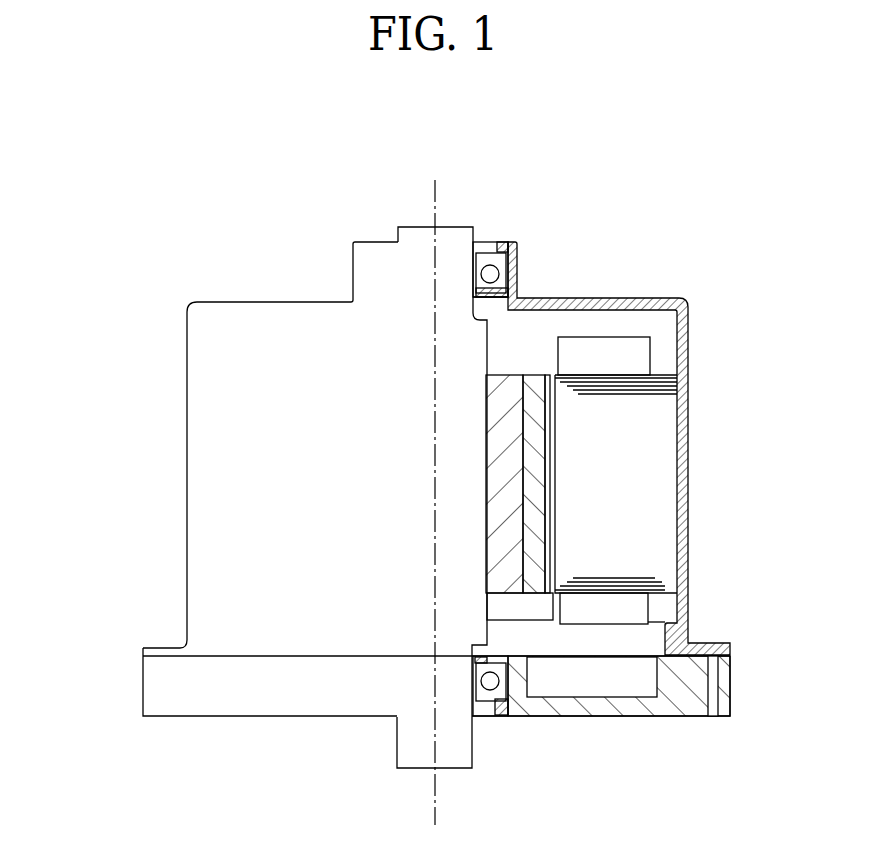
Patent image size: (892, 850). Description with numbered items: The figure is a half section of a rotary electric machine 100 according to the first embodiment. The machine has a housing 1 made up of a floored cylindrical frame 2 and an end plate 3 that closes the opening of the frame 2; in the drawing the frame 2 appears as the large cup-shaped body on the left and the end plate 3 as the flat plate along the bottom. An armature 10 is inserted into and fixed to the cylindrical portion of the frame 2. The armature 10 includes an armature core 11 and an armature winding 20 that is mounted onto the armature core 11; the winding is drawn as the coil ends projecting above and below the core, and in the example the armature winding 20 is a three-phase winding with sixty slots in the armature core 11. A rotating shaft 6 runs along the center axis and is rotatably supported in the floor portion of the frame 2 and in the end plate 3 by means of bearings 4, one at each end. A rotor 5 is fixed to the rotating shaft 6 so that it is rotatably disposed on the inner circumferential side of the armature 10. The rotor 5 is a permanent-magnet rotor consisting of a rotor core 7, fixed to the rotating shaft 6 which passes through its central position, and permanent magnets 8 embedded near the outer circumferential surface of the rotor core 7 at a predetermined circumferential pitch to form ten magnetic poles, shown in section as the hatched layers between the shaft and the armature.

The rotary electric machine 100 is at (173, 163).
The housing 1 is at (83, 585).
The frame 2 is at (202, 589).
The end plate 3 is at (160, 673).
The bearings 4 is at (518, 258).
The rotor 5 is at (507, 365).
The rotating shaft 6 is at (477, 338).
The rotor core 7 is at (513, 585).
The permanent magnets 8 is at (535, 582).
The armature 10 is at (768, 332).
The armature core 11 is at (662, 427).
The armature winding 20 is at (648, 353).